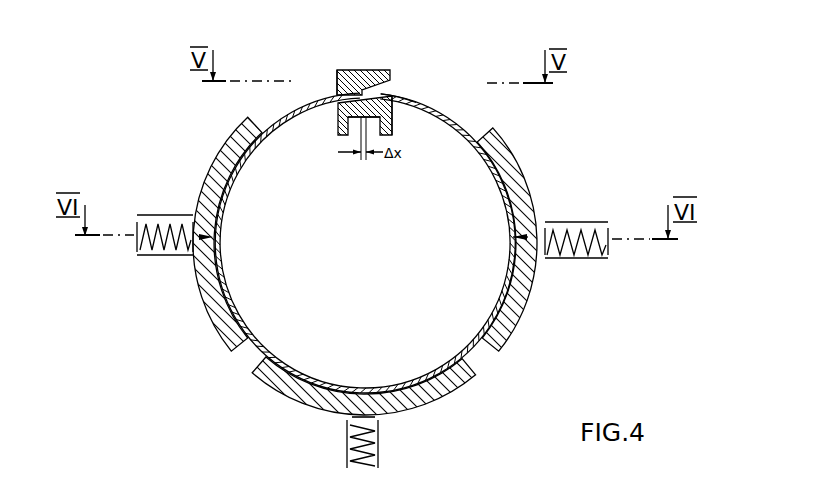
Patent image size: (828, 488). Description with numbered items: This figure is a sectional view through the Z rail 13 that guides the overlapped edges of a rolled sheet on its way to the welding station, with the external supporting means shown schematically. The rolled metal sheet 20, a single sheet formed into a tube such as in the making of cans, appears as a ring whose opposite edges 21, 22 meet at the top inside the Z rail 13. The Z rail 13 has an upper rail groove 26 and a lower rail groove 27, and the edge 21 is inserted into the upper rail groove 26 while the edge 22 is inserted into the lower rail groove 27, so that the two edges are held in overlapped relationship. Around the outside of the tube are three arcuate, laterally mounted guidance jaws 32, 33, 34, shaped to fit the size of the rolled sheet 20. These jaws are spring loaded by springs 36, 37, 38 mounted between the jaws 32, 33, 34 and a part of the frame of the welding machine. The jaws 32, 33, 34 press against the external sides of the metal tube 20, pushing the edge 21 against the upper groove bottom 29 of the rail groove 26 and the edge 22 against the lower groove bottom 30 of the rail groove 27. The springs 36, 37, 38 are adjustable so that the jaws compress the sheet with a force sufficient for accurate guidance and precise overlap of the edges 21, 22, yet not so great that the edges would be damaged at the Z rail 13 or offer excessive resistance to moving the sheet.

The Z rail 13 is at (378, 72).
The metal sheet 20 is at (253, 347).
The edge 21 is at (367, 72).
The edge 22 is at (392, 107).
The upper rail groove 26 is at (392, 82).
The lower rail groove 27 is at (335, 94).
The upper groove bottom 29 is at (360, 70).
The lower groove bottom 30 is at (372, 105).
The guidance jaw 32 is at (213, 302).
The guidance jaw 33 is at (288, 380).
The guidance jaw 34 is at (513, 310).
The spring 36 is at (159, 226).
The spring 37 is at (378, 452).
The spring 38 is at (567, 232).